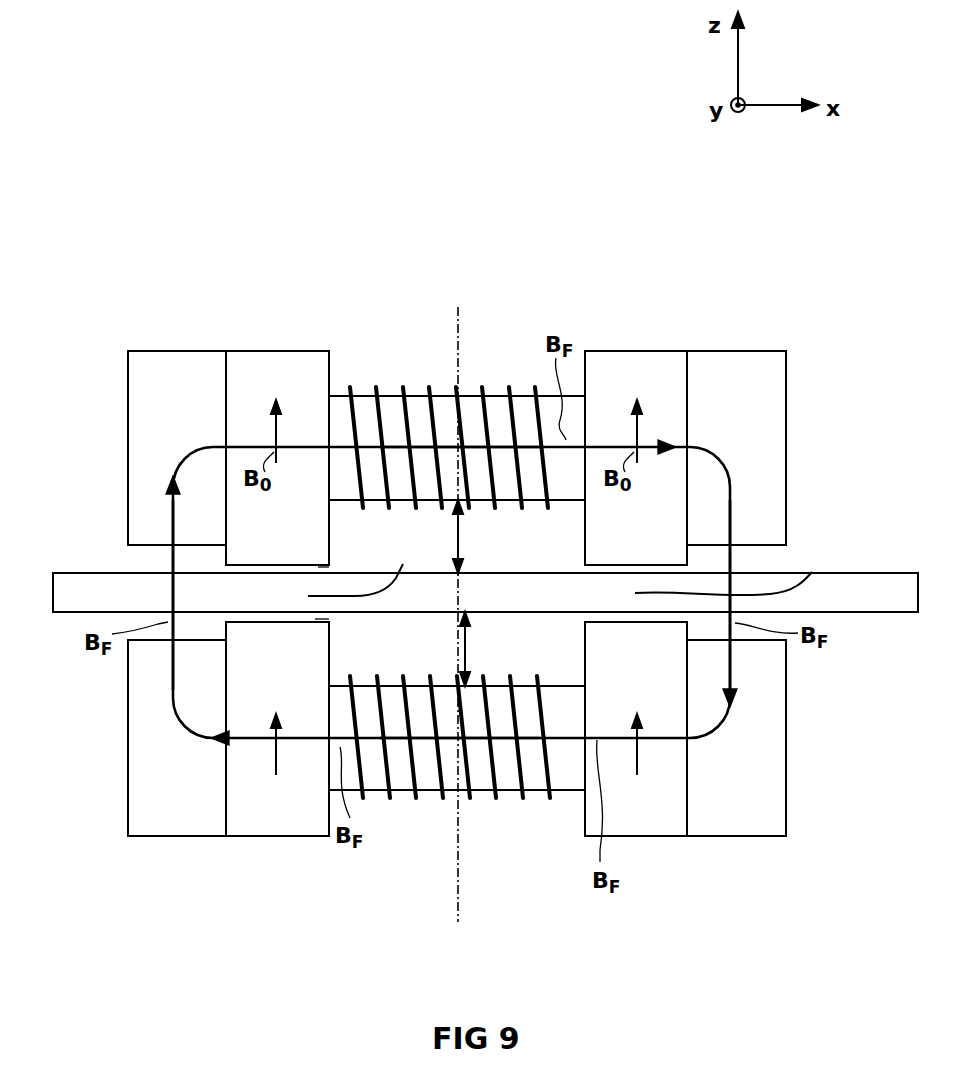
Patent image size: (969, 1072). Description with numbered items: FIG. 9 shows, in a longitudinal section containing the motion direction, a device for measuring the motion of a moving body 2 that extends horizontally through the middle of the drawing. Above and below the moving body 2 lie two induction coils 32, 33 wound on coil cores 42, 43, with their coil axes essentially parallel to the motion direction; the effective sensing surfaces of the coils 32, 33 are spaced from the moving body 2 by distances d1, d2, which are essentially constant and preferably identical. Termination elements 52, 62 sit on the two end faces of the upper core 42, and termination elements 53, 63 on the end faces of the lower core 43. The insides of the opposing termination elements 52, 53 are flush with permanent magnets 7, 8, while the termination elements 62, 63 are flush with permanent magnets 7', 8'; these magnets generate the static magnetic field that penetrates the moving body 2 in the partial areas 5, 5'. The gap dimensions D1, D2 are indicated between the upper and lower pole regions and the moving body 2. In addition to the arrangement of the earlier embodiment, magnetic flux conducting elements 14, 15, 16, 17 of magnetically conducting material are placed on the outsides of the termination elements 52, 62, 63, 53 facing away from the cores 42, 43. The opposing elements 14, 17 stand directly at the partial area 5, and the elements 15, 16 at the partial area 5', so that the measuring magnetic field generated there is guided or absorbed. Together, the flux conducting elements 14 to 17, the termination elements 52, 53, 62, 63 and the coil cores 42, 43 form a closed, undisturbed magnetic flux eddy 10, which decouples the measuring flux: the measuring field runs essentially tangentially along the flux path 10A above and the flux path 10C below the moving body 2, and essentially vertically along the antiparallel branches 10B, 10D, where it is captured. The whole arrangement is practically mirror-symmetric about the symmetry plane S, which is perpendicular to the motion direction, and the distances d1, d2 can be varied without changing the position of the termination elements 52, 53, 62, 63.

The moving body 2 is at (95, 575).
The partial area 5 is at (362, 565).
The partial area 5' is at (739, 568).
The permanent magnet 7 is at (295, 542).
The permanent magnet 7' is at (617, 553).
The permanent magnet 8 is at (295, 647).
The permanent magnet 8' is at (613, 633).
The magnetic flux eddy 10 is at (170, 511).
The flux path 10A is at (420, 442).
The flux path 10B is at (730, 487).
The flux path 10C is at (511, 740).
The flux path 10D is at (170, 522).
The magnetic flux conducting element 14 is at (178, 370).
The magnetic flux conducting element 15 is at (741, 370).
The magnetic flux conducting element 16 is at (741, 818).
The magnetic flux conducting element 17 is at (178, 818).
The induction coil 32 is at (487, 408).
The induction coil 33 is at (440, 775).
The coil core 42 is at (362, 408).
The coil core 43 is at (563, 754).
The termination element 52 is at (278, 370).
The termination element 53 is at (268, 818).
The termination element 62 is at (651, 370).
The termination element 63 is at (668, 818).
The upper gap dimension D1 is at (320, 567).
The lower gap dimension D2 is at (315, 618).
The distance d1 is at (461, 536).
The distance d2 is at (468, 648).
The symmetry plane S is at (458, 905).